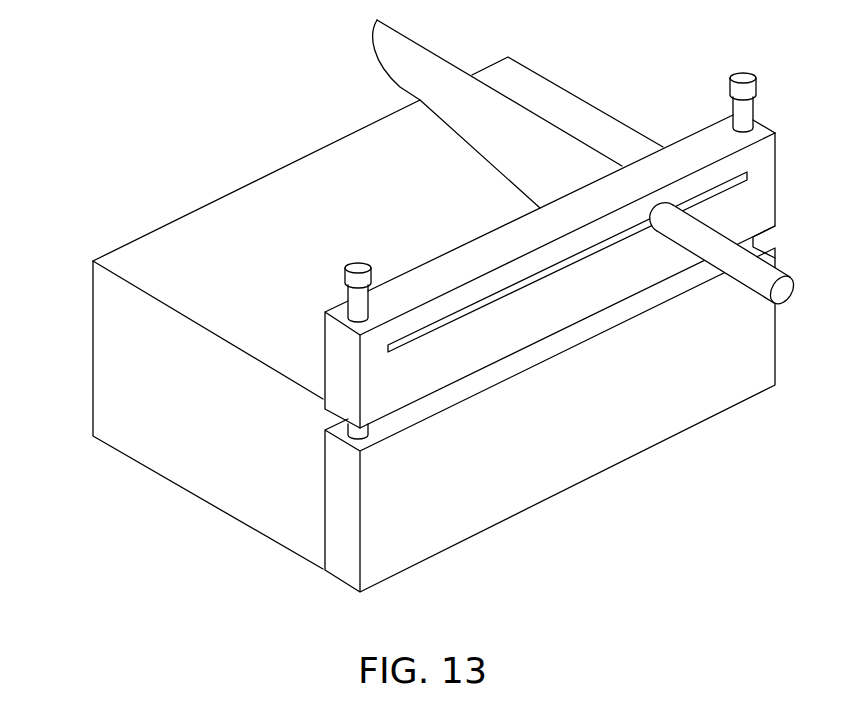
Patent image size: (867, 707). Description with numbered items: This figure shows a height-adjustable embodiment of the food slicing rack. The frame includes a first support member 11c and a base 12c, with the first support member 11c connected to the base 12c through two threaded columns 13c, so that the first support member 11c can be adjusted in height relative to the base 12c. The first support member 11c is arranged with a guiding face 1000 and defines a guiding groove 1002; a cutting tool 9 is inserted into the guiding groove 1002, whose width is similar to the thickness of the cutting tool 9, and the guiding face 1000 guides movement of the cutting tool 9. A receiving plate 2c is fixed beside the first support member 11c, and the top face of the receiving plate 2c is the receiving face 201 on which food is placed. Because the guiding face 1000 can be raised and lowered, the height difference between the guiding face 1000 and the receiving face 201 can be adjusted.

The receiving plate 2c is at (340, 313).
The receiving face 201 is at (263, 203).
The cutting tool 9 is at (542, 138).
The first support member 11c is at (589, 318).
The base 12c is at (503, 478).
The threaded columns 13c is at (743, 107).
The guiding face 1000 is at (510, 293).
The guiding groove 1002 is at (572, 258).